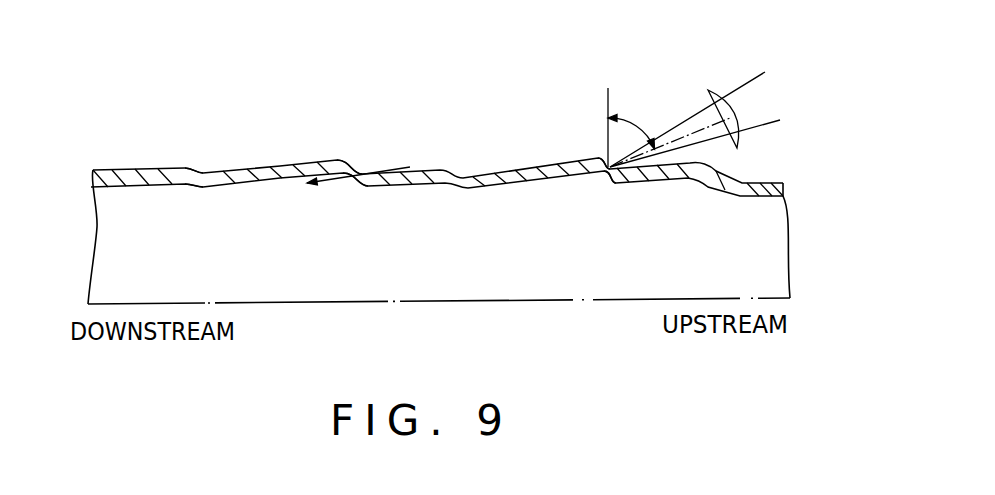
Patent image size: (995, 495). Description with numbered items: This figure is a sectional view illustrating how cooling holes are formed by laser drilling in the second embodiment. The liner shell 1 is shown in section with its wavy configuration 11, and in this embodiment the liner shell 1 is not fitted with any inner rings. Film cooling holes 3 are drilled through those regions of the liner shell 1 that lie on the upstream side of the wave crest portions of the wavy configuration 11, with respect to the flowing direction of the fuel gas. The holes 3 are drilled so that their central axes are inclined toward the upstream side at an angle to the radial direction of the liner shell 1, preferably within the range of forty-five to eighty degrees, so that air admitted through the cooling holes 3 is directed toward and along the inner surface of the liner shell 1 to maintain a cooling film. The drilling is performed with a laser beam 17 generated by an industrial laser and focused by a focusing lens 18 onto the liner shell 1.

The liner shell 1 is at (273, 157).
The film cooling holes 3 is at (343, 182).
The wavy configuration 11 is at (200, 168).
The laser beam 17 is at (741, 86).
The focusing lens 18 is at (708, 90).